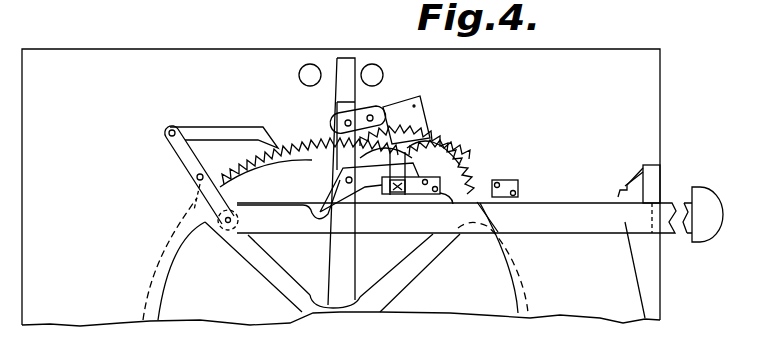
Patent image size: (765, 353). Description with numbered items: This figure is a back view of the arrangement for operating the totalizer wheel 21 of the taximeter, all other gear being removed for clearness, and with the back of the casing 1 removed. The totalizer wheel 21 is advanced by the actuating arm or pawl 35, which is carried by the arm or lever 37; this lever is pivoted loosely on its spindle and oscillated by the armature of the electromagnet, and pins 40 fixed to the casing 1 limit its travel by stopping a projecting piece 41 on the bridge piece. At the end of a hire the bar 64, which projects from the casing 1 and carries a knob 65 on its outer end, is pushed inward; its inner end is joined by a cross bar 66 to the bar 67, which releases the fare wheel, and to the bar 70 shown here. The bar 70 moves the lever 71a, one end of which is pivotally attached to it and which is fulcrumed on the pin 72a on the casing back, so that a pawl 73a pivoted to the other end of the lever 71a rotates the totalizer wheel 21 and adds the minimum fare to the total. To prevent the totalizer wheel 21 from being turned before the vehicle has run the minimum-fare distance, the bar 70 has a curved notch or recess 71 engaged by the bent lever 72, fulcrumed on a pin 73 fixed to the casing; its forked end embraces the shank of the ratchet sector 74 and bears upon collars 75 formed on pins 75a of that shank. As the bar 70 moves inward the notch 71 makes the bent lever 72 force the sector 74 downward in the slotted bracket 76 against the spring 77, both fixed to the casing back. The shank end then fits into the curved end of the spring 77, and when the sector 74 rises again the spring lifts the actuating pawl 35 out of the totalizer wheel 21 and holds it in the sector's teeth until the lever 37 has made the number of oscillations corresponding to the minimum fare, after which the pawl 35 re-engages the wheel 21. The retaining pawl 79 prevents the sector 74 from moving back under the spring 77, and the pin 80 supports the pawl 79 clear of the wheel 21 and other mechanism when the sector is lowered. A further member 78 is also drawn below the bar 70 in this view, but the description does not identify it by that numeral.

The casing 1 is at (341, 187).
The totalizer wheel 21 is at (243, 251).
The actuating arm 35 is at (378, 112).
The arm or lever 37 is at (335, 257).
The pins 40 is at (366, 64).
The projecting piece 41 is at (343, 82).
The bar 64 is at (630, 192).
The knob 65 is at (700, 200).
The cross bar 66 is at (655, 190).
The bar 67 is at (625, 186).
The bar 70 is at (580, 208).
The curved notch or recess 71 is at (312, 196).
The lever 71a is at (185, 156).
The bent lever 72 is at (343, 181).
The pin 72a is at (198, 178).
The pin 73 is at (353, 184).
The pawl 73a is at (203, 130).
The ratchet sector 74 is at (460, 146).
The collars 75 is at (440, 197).
The pins 75a is at (420, 179).
The slotted bracket 76 is at (518, 181).
The spring 77 is at (490, 228).
The lever 78 is at (632, 268).
The retaining pawl 79 is at (425, 100).
The pin 80 is at (442, 136).